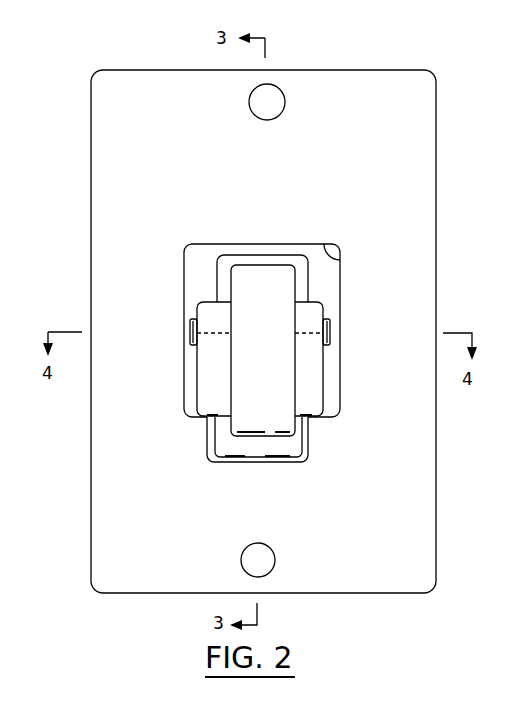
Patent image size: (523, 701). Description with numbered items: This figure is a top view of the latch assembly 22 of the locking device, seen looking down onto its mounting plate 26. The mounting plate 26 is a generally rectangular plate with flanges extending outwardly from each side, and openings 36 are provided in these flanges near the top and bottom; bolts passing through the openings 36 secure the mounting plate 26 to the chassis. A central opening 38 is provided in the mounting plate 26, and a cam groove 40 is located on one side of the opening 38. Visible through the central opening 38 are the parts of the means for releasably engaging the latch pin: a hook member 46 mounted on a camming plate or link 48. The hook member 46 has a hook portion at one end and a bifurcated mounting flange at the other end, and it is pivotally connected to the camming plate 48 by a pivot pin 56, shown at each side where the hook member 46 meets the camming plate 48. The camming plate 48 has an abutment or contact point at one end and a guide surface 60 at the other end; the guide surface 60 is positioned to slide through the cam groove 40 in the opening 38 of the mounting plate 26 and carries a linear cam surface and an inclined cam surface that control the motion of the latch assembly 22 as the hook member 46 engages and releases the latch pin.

The latch assembly 22 is at (445, 262).
The mounting plate 26 is at (437, 141).
The openings 36 is at (272, 87).
The central opening 38 is at (324, 244).
The cam groove 40 is at (278, 460).
The hook member 46 is at (296, 384).
The camming plate 48 is at (251, 255).
The pivot pin 56 is at (330, 333).
The guide surface 60 is at (220, 437).